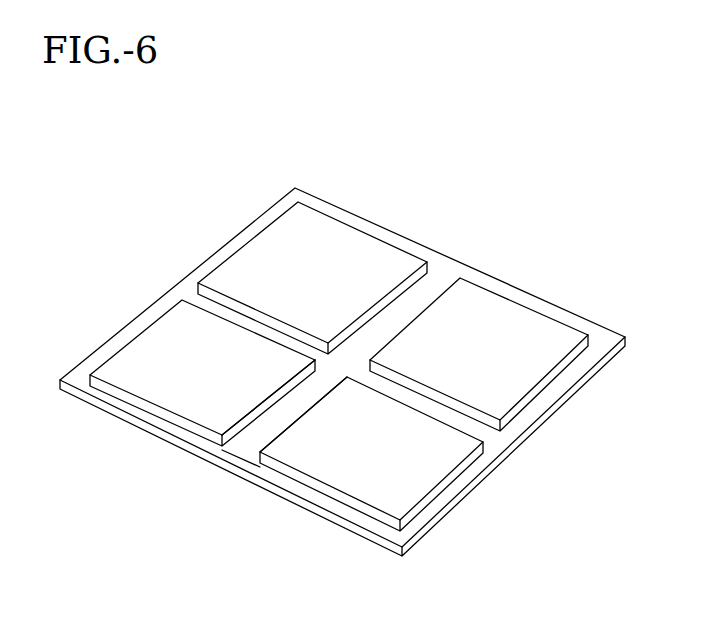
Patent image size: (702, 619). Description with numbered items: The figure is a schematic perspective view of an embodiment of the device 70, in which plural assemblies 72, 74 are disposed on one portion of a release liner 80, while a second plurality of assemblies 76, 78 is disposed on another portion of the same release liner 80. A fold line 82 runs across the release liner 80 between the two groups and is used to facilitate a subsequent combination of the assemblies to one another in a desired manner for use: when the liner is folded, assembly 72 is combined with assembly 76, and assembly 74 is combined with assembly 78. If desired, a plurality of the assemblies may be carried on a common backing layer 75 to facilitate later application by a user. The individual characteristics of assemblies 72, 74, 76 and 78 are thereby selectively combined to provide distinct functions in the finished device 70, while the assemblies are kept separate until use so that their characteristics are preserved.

The device 70 is at (169, 193).
The assembly 72 is at (265, 268).
The assembly 74 is at (140, 360).
The common backing layer 75 is at (318, 357).
The assembly 76 is at (533, 338).
The assembly 78 is at (427, 455).
The release liner 80 is at (175, 448).
The fold line 82 is at (228, 462).